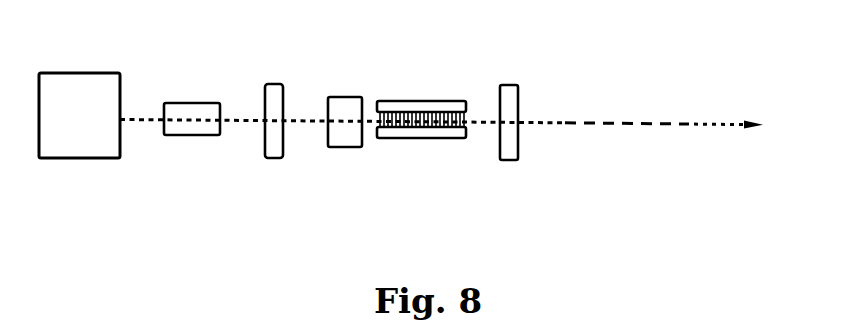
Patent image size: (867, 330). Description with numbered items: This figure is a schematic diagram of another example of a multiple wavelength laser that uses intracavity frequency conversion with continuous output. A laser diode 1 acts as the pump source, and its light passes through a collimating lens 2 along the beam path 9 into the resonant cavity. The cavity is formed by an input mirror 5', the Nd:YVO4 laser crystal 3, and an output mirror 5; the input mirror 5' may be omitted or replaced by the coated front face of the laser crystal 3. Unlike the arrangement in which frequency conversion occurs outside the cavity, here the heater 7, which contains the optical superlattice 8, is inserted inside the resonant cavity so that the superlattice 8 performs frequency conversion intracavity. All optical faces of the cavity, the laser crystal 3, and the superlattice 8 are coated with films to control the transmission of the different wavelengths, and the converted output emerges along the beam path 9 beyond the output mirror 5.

The laser diode 1 is at (79, 100).
The collimating lens 2 is at (192, 89).
The input mirror 5' is at (274, 98).
The laser crystal 3 is at (345, 95).
The heater 7 is at (421, 91).
The optical superlattice 8 is at (423, 128).
The output mirror 5 is at (508, 101).
The beam path 9 is at (441, 89).